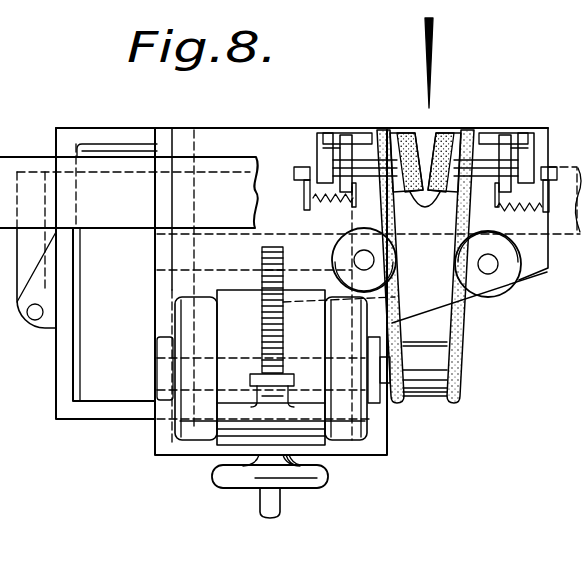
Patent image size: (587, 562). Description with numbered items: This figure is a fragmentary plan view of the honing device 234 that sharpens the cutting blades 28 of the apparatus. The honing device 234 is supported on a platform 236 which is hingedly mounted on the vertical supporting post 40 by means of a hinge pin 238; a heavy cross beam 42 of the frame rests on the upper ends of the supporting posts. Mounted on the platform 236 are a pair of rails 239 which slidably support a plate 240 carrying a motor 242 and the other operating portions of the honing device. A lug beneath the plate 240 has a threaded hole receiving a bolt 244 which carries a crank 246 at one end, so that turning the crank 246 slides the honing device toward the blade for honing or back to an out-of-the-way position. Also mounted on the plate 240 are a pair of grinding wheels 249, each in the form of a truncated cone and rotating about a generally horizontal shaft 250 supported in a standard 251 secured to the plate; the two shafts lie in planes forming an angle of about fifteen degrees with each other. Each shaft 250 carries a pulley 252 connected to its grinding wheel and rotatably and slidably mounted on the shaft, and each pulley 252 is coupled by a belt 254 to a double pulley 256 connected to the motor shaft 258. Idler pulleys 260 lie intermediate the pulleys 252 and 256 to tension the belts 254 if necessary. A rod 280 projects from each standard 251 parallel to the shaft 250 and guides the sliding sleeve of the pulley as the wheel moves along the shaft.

The cutting blade 28 is at (437, 32).
The vertical supporting post 40 is at (50, 263).
The cross beam 42 is at (105, 187).
The honing device 234 is at (473, 381).
The platform 236 is at (68, 420).
The hinge pin 238 is at (43, 309).
The rails 239 is at (173, 108).
The plate 240 is at (366, 455).
The motor 242 is at (225, 382).
The bolt 244 is at (257, 326).
The crank 246 is at (250, 477).
The grinding wheel 249 is at (455, 133).
The shaft 250 is at (293, 172).
The standard 251 is at (312, 133).
The pulley 252 is at (370, 134).
The belt 254 is at (403, 313).
The double pulley 256 is at (430, 390).
The motor shaft 258 is at (403, 369).
The idler pulley 260 is at (343, 250).
The rod 280 is at (331, 132).